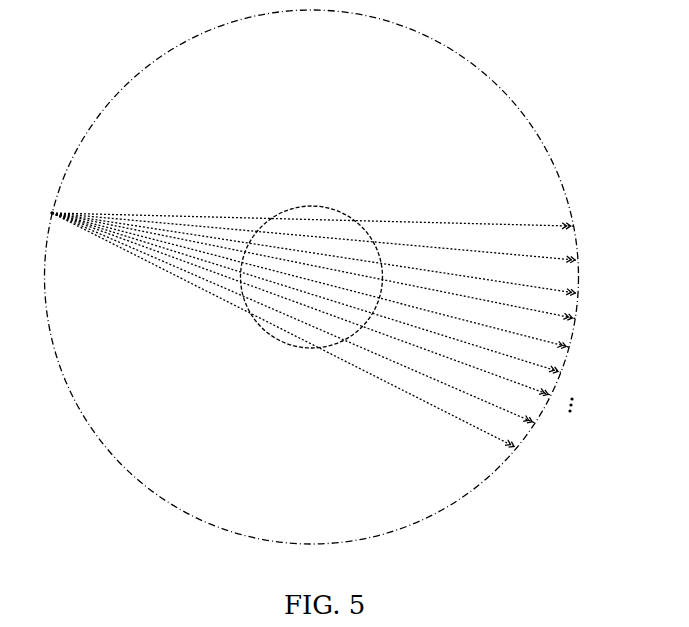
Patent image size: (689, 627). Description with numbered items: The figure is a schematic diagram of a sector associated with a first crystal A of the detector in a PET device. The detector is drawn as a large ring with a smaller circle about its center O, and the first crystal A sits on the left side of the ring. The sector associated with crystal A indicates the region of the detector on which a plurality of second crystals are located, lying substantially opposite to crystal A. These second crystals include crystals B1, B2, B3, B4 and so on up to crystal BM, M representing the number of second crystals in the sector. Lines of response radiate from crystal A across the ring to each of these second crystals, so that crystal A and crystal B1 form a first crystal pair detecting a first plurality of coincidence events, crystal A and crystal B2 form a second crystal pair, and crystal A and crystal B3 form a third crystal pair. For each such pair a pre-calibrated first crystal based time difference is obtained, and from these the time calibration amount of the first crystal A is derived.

The first crystal A is at (43, 213).
The center point O of circle O is at (312, 277).
The crystal B1 is at (326, 228).
The crystal B2 is at (326, 245).
The crystal B3 is at (326, 262).
The receiving point B4 is at (326, 275).
The crystal BM is at (298, 344).